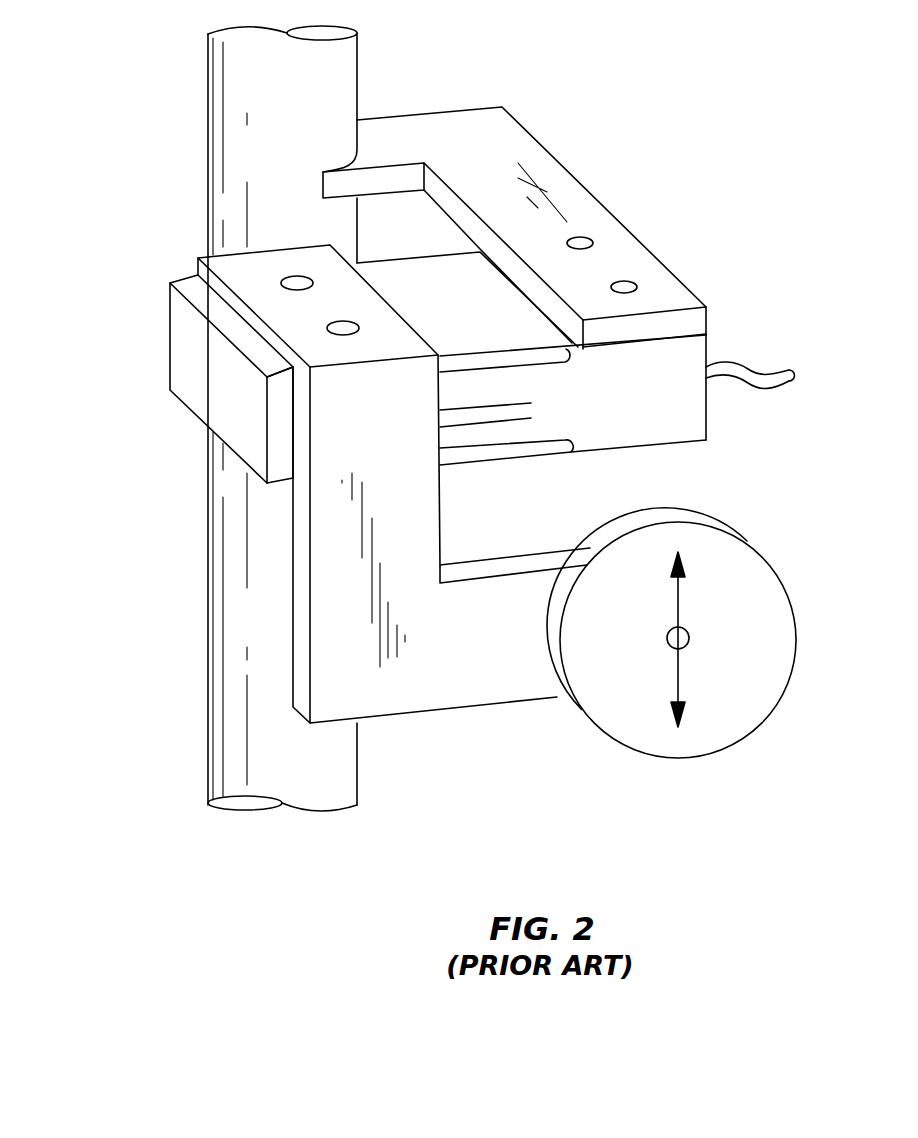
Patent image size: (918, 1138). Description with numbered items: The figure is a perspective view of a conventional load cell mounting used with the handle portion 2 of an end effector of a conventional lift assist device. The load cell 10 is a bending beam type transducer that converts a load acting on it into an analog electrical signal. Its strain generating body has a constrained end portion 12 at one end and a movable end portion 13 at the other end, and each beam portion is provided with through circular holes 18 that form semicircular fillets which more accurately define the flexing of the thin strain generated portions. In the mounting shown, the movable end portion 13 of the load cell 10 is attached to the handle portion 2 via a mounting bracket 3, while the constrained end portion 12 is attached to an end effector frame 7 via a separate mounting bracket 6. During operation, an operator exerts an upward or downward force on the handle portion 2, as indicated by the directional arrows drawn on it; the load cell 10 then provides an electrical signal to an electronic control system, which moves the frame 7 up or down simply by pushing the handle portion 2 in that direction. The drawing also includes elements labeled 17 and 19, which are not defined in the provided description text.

The handle portion 2 is at (725, 715).
The mounting bracket 3 is at (438, 693).
The mounting bracket 6 is at (552, 178).
The end effector frame 7 is at (243, 95).
The load cell 10 is at (123, 333).
The constrained end portion 12 is at (608, 428).
The movable end portion 13 is at (200, 393).
The flexure 17 is at (455, 316).
The through circular holes 18 is at (541, 393).
The cable 19 is at (747, 372).